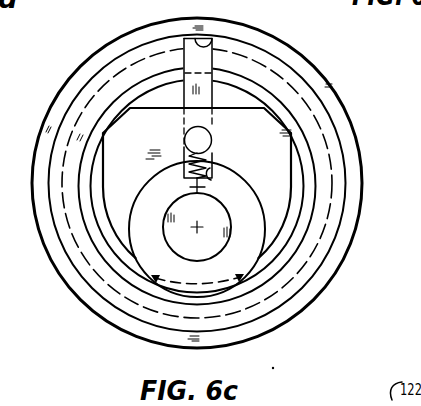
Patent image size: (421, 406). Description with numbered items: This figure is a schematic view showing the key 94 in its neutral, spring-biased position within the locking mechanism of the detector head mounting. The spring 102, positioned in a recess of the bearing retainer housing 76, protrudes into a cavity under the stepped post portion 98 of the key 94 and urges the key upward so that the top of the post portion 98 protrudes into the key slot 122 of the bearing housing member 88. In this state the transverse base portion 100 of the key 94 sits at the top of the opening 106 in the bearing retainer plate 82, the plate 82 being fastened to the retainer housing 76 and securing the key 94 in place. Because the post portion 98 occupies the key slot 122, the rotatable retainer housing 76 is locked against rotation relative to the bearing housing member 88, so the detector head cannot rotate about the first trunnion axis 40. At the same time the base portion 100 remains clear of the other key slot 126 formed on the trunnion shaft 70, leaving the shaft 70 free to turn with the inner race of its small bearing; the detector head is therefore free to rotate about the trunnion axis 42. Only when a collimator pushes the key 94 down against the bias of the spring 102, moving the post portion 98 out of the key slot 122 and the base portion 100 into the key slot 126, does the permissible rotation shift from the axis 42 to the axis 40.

The first trunnion axis 40 is at (195, 188).
The trunnion axis 42 is at (196, 227).
The trunnion shaft 70 is at (263, 232).
The bearing retainer housing 76 is at (318, 177).
The bearing retainer plate 82 is at (284, 133).
The bearing housing member 88 is at (322, 72).
The key 94 is at (176, 92).
The stepped post portion 98 is at (184, 58).
The transverse base portion 100 is at (208, 142).
The spring 102 is at (210, 157).
The opening 106 is at (190, 143).
The key slot 122 is at (213, 46).
The key slot 126 is at (205, 172).